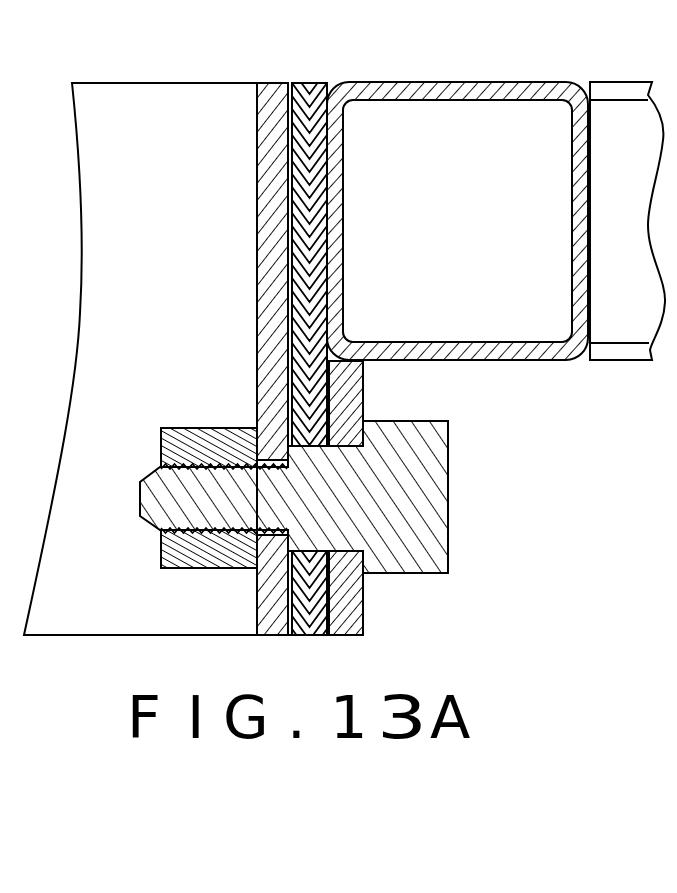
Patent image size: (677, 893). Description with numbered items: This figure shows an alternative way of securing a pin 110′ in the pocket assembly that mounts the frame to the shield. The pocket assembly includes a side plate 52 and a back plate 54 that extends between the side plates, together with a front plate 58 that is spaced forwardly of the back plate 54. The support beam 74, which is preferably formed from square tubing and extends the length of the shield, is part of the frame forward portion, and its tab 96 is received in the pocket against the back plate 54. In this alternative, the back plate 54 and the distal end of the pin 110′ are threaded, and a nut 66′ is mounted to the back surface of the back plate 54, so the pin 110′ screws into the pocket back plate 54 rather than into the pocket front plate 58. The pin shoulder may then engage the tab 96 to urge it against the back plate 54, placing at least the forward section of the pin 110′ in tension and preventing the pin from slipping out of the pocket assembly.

The side plate 52 is at (132, 115).
The back plate 54 is at (267, 82).
The tab 96 is at (307, 83).
The support beam 74 is at (412, 82).
The front plate 58 is at (363, 403).
The nut 66′ is at (208, 428).
The pin 110′ is at (448, 500).